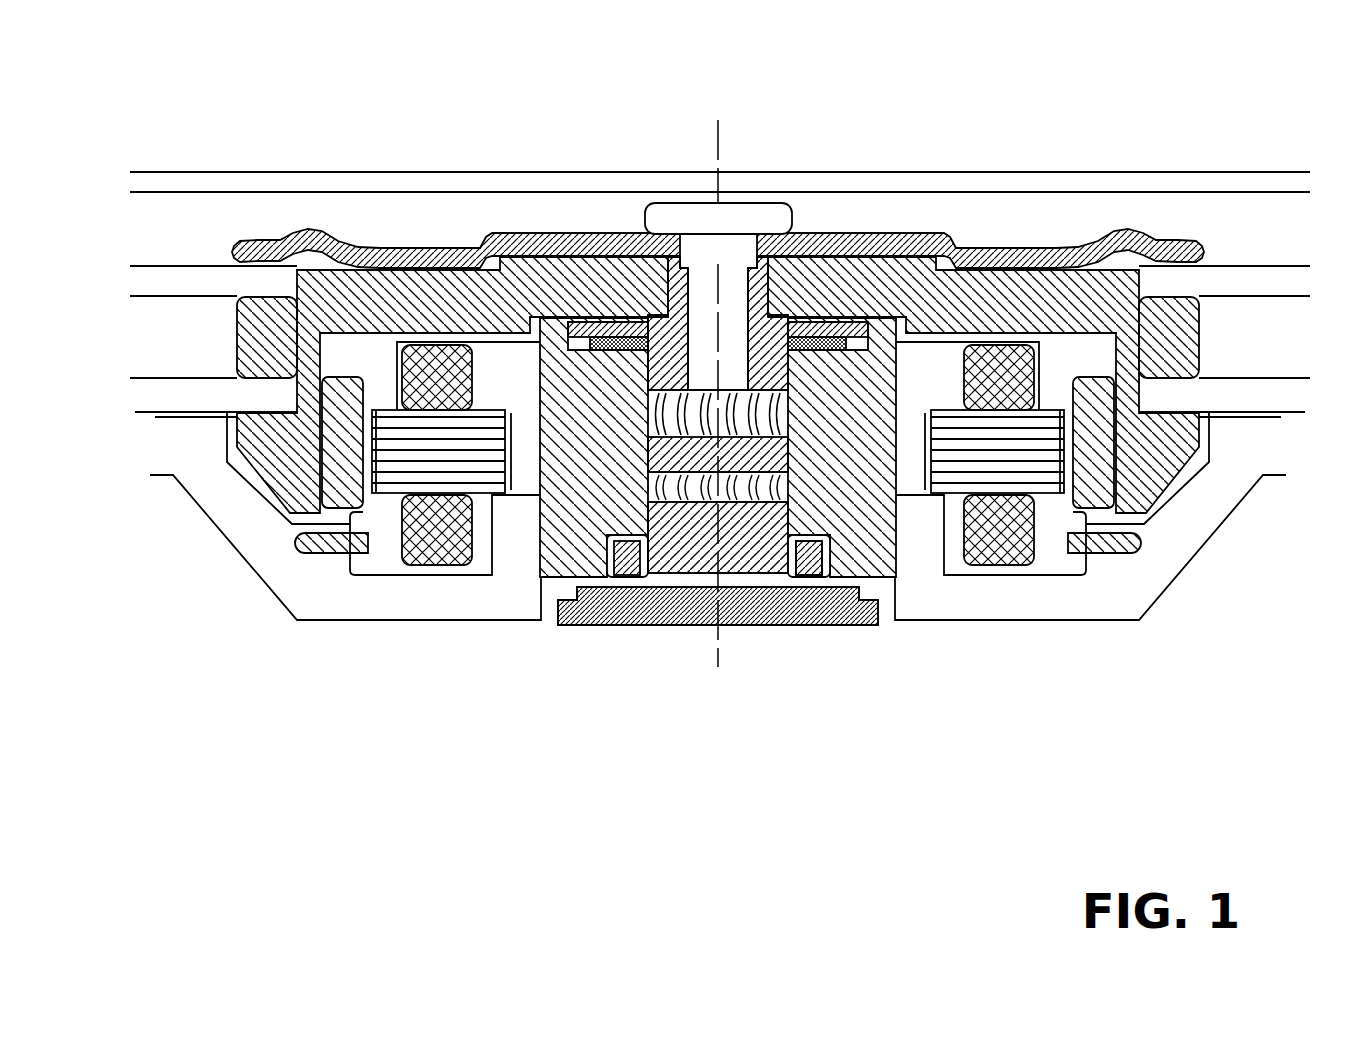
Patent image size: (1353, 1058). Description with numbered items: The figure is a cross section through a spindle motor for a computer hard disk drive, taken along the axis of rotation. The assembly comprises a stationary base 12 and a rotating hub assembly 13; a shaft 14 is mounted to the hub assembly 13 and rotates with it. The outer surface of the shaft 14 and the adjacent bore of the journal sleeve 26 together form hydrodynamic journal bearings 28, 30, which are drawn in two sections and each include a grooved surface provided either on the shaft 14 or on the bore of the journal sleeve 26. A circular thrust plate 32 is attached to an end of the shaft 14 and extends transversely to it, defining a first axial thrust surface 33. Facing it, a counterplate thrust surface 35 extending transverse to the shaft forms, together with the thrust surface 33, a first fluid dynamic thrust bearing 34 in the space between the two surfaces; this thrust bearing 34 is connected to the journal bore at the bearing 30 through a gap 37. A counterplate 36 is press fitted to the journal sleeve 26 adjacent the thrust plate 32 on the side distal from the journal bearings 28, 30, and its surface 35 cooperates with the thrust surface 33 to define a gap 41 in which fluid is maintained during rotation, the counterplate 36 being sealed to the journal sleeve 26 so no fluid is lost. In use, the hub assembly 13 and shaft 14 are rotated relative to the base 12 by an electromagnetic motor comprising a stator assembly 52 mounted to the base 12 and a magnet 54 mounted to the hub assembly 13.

The base 12 is at (245, 527).
The hub assembly 13 is at (337, 292).
The shaft 14 is at (772, 622).
The journal sleeve 26 is at (850, 425).
The hydrodynamic journal bearing 28 is at (812, 505).
The hydrodynamic journal bearing 30 is at (893, 595).
The thrust plate 32 is at (822, 600).
The first axial thrust surface 33 is at (797, 548).
The first fluid dynamic thrust bearing 34 is at (543, 577).
The counterplate thrust surface 35 is at (640, 542).
The counterplate 36 is at (872, 622).
The gap 37 is at (575, 625).
The gap 41 is at (543, 577).
The stator assembly 52 is at (458, 462).
The magnet 54 is at (348, 493).